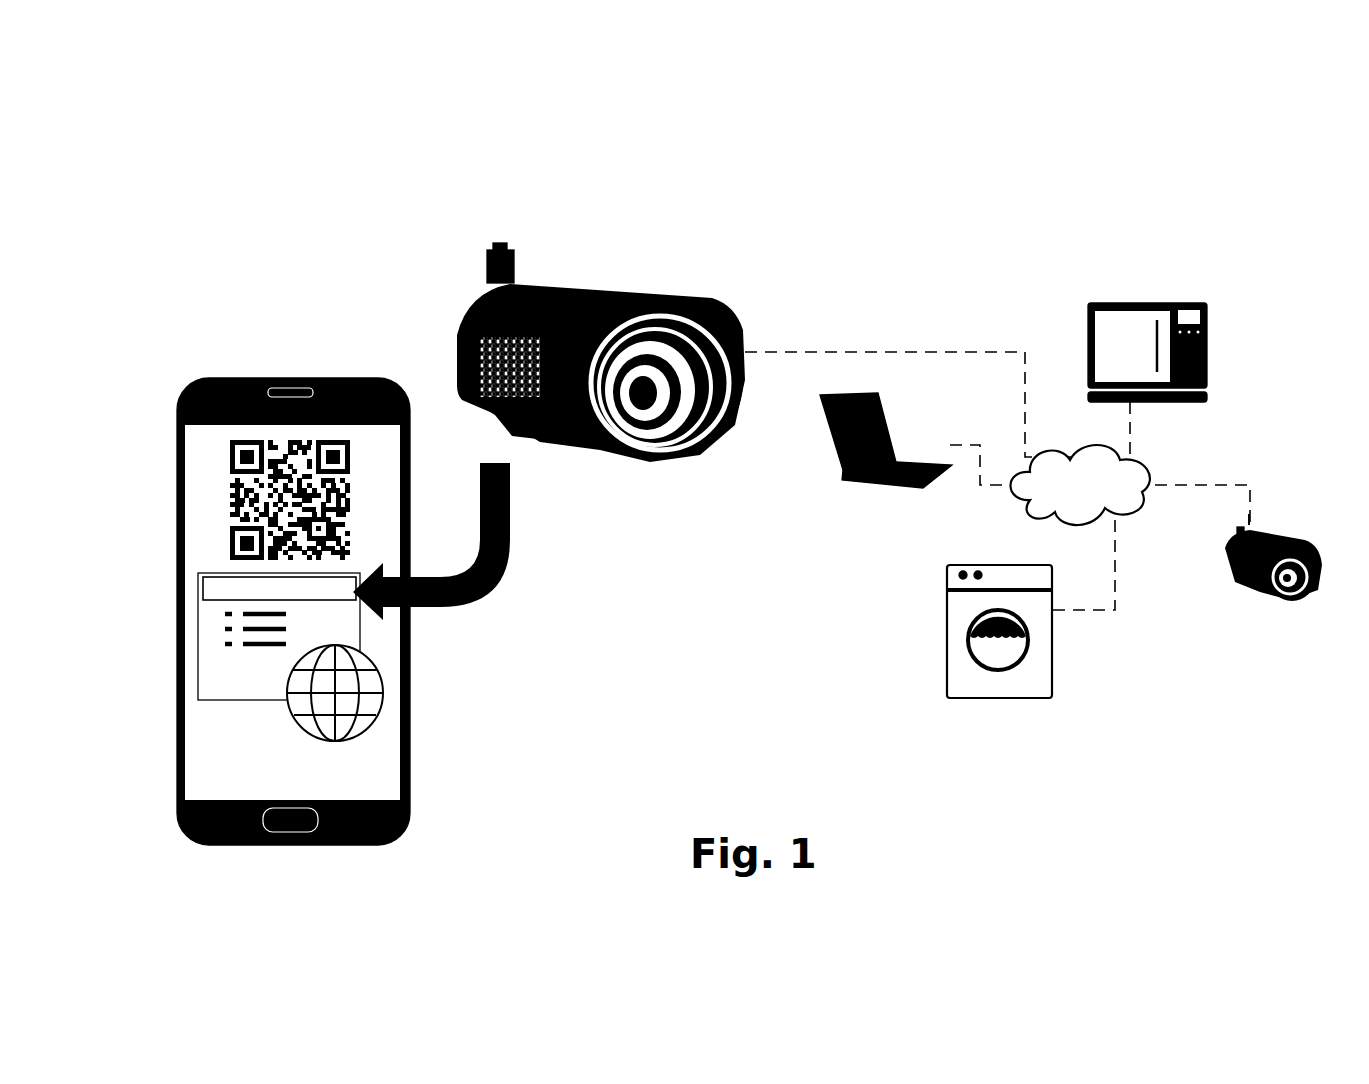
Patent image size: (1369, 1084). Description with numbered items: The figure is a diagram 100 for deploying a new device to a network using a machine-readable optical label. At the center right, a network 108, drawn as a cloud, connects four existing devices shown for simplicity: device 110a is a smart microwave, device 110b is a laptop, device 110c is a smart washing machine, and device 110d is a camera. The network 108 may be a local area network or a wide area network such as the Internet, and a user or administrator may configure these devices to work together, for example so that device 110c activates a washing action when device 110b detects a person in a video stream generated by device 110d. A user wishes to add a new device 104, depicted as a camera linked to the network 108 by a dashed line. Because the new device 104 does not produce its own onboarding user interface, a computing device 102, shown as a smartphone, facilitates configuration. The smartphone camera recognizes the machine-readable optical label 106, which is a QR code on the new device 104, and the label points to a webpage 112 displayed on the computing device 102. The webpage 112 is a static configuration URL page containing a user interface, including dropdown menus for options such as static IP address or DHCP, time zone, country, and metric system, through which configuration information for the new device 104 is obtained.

The diagram 100 is at (765, 140).
The computing device 102 is at (262, 378).
The new device 104 is at (503, 243).
The machine-readable optical label 106 is at (480, 357).
The network 108 is at (1118, 477).
The device 110a is at (1183, 303).
The device 110b is at (863, 493).
The device 110c is at (1017, 700).
The device 110d is at (1257, 595).
The webpage 112 is at (380, 657).